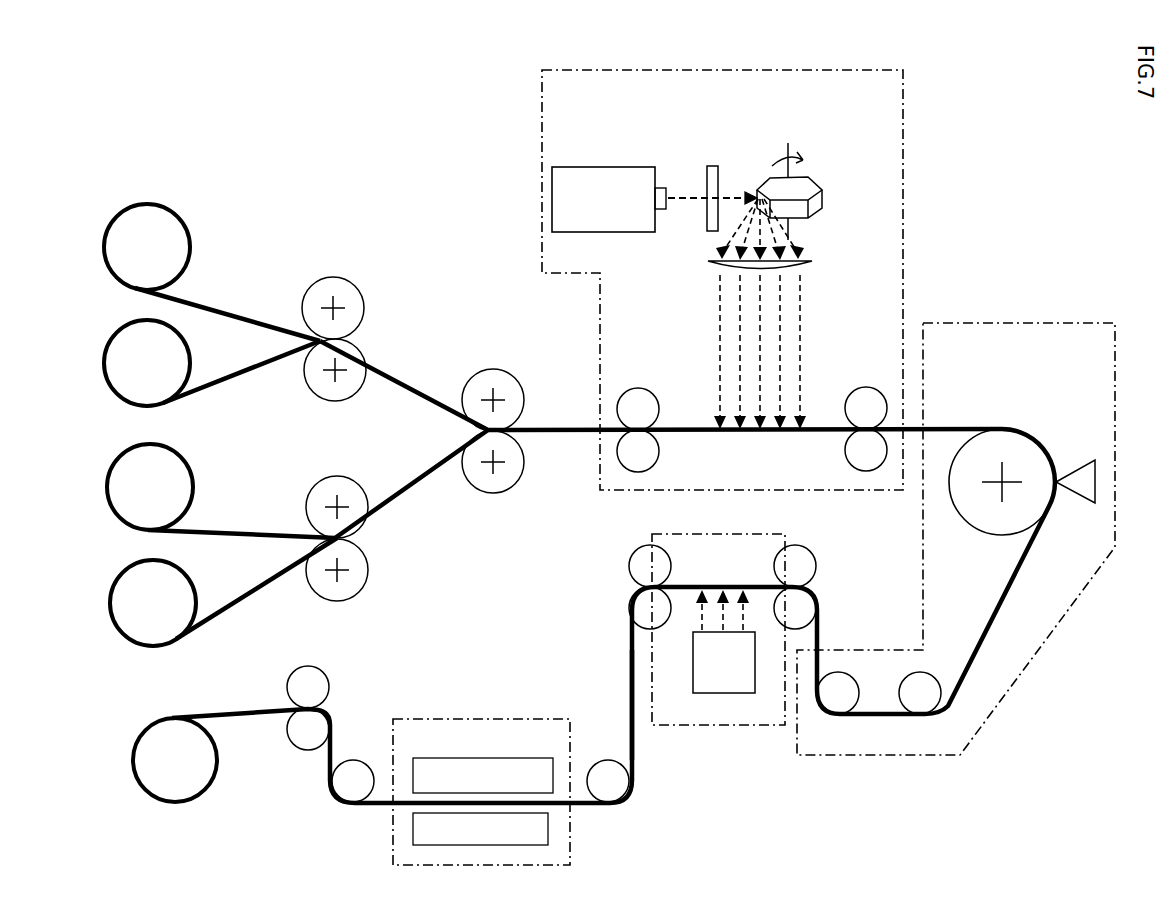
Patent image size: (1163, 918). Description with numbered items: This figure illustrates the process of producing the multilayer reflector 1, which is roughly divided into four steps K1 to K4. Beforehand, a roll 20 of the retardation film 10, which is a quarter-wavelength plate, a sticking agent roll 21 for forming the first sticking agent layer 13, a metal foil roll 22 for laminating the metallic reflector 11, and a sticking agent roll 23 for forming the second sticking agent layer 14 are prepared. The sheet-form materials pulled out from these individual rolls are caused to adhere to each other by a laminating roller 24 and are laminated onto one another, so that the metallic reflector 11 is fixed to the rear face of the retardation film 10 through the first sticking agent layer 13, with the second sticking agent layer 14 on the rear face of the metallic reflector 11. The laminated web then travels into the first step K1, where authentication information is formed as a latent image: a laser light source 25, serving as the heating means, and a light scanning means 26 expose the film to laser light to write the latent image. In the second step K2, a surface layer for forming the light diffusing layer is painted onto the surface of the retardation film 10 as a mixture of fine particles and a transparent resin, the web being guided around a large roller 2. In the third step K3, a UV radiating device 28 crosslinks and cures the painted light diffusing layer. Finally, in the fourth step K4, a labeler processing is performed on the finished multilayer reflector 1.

The multilayer reflector 1 is at (583, 432).
The roller 2 is at (1083, 475).
The retardation film 10 is at (202, 302).
The metallic reflector 11 is at (188, 538).
The first sticking agent layer 13 is at (207, 388).
The second sticking agent layer 14 is at (203, 620).
The roll of retardation film 20 is at (137, 215).
The sticking agent roll 21 is at (140, 352).
The metal foil roll 22 is at (142, 468).
The sticking agent roll 23 is at (145, 580).
The laminating roller 24 is at (347, 360).
The laser light source 25 is at (572, 193).
The light scanning means 26 is at (767, 143).
The UV radiating device 28 is at (646, 705).
The first step K1 is at (722, 288).
The second step K2 is at (956, 524).
The third step K3 is at (708, 670).
The fourth step K4 is at (481, 781).